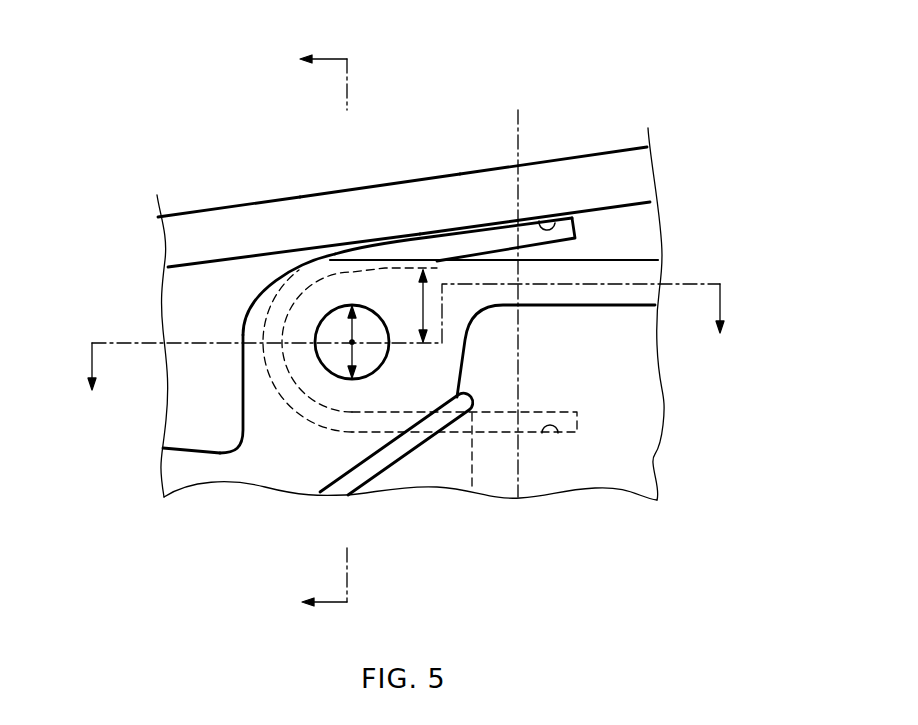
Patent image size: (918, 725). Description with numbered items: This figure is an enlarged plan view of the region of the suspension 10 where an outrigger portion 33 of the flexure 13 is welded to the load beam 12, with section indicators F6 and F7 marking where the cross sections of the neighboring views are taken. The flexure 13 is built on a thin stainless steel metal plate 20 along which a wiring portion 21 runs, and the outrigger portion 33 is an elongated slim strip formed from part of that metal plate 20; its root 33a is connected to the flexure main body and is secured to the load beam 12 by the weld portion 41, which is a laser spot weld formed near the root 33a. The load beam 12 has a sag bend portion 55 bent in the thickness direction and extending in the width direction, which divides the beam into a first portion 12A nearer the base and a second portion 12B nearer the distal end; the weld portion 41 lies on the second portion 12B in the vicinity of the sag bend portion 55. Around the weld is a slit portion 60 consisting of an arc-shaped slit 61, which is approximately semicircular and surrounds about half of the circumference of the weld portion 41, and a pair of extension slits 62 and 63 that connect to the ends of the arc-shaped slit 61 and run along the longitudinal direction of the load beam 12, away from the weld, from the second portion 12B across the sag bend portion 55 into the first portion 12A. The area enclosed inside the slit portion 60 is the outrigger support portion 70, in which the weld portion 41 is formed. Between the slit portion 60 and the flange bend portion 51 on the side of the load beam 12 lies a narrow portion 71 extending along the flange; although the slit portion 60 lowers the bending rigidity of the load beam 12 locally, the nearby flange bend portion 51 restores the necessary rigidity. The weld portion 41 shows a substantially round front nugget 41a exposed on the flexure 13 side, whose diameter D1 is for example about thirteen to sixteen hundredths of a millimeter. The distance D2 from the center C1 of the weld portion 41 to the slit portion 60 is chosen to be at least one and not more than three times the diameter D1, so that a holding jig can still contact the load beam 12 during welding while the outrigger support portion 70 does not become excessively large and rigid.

The suspension 10 is at (479, 90).
The load beam 12 is at (485, 160).
The first portion 12A is at (613, 220).
The second portion 12B is at (183, 297).
The flexure 13 is at (667, 273).
The metal plate 20 is at (623, 270).
The wiring portion 21 is at (638, 422).
The outrigger portion 33 is at (183, 467).
The root 33a is at (348, 397).
The weld portion 41 is at (292, 307).
The front nugget 41a is at (332, 368).
The flange bend portion 51 is at (380, 200).
The sag bend portion 55 is at (519, 351).
The slit portion 60 is at (343, 240).
The arc-shaped slit 61 is at (250, 312).
The extension slit 62 is at (547, 221).
The extension slit 63 is at (558, 433).
The outrigger support portion 70 is at (322, 320).
The narrow portion 71 is at (420, 237).
The center of the weld portion C1 is at (352, 342).
The diameter of the front nugget D1 is at (356, 352).
The distance from the center of the weld portion to the slit portion D2 is at (421, 300).
The section line F6 is at (405, 355).
The section line F7 is at (308, 328).